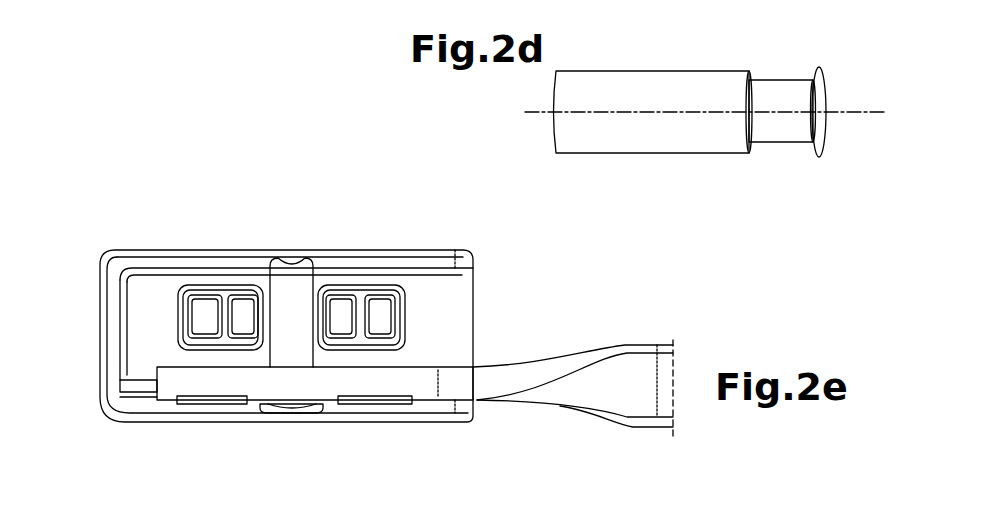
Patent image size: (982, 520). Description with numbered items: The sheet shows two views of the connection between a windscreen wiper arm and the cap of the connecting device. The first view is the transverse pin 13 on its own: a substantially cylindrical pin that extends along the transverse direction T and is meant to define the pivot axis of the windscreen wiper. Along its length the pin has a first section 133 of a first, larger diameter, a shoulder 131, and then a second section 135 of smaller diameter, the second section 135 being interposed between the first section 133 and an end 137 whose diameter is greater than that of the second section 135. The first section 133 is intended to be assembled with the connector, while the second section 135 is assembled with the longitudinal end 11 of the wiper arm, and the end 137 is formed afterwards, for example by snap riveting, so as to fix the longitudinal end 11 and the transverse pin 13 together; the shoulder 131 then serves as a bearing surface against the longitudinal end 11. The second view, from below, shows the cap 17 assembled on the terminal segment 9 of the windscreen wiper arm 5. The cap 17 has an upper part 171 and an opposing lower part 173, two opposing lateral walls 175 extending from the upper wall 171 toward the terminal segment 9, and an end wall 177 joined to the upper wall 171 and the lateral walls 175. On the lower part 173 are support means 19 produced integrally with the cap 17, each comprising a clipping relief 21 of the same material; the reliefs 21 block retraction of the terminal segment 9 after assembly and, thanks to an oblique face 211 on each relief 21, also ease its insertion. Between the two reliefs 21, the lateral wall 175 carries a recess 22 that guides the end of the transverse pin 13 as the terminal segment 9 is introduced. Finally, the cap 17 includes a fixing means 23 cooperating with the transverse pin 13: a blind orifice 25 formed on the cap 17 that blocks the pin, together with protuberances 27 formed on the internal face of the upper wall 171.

In FIG. 2e, the windscreen wiper arm 5 is at (627, 372).
In FIG. 2e, the terminal segment 9 is at (168, 357).
In FIG. 2e, the longitudinal end 11 is at (104, 367).
In FIG. 2d, the transverse pin 13 is at (693, 121).
In FIG. 2e, the transverse pin 13 is at (302, 280).
In FIG. 2e, the cap 17 is at (301, 325).
In FIG. 2e, the support means 19 is at (382, 410).
In FIG. 2e, the relief 21 is at (402, 410).
In FIG. 2e, the recess 22 is at (297, 398).
In FIG. 2e, the fixing means 23 is at (227, 165).
In FIG. 2e, the orifice 25 is at (290, 270).
In FIG. 2e, the protuberance 27 is at (223, 290).
In FIG. 2d, the shoulder 131 is at (755, 150).
In FIG. 2e, the shoulder 131 is at (260, 357).
In FIG. 2d, the first section 133 is at (646, 70).
In FIG. 2e, the first section 133 is at (310, 358).
In FIG. 2d, the second section 135 is at (795, 80).
In FIG. 2d, the end 137 is at (822, 97).
In FIG. 2e, the end 137 is at (275, 414).
In FIG. 2e, the upper part 171 is at (457, 302).
In FIG. 2e, the lower part 173 is at (470, 241).
In FIG. 2e, the lateral wall 175 is at (148, 250).
In FIG. 2e, the end wall 177 is at (100, 340).
In FIG. 2e, the oblique face 211 is at (205, 405).
In FIG. 2d, the transverse direction T is at (884, 114).